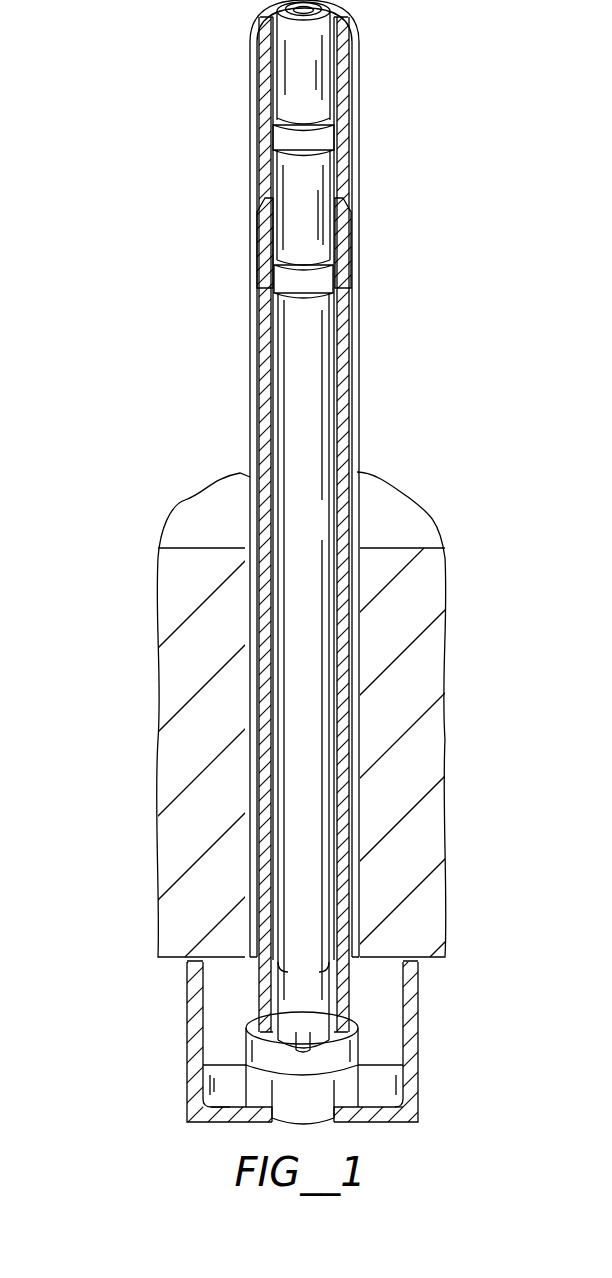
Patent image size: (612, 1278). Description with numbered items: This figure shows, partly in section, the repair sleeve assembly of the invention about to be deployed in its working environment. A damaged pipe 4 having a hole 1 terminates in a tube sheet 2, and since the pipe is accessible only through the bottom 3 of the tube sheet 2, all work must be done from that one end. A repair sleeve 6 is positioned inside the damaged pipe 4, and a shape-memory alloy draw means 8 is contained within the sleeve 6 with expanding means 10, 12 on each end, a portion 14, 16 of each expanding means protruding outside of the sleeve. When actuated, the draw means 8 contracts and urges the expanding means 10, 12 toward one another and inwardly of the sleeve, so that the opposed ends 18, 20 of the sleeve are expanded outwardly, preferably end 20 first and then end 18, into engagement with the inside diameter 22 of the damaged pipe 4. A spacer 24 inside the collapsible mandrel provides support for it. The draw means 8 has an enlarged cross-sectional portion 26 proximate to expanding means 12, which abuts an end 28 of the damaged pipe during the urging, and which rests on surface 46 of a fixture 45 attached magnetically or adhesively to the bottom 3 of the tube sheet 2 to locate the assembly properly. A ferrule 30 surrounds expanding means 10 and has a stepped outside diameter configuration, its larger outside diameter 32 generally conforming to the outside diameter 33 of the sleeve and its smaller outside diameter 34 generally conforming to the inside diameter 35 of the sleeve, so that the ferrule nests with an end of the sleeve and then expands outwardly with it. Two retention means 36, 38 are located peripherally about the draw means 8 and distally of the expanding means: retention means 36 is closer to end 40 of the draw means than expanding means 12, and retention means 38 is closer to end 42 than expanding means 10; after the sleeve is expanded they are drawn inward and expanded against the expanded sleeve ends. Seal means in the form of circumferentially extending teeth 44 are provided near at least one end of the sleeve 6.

The hole 1 is at (250, 713).
The tube sheet 2 is at (410, 607).
The bottom of the tube sheet 3 is at (427, 963).
The damaged pipe 4 is at (253, 592).
The repair sleeve 6 is at (262, 505).
The shape-memory alloy draw means 8 is at (307, 518).
The expanding means 10 is at (315, 178).
The expanding means 12 is at (343, 975).
The protruding portion of expanding means 14 is at (268, 162).
The protruding portion of expanding means 16 is at (238, 1010).
The sleeve end 18 is at (338, 255).
The sleeve end 20 is at (360, 930).
The inside diameter of the damaged pipe 22 is at (362, 860).
The spacer 24 is at (290, 1037).
The enlarged cross-sectional portion 26 is at (262, 1075).
The end of the damaged pipe 28 is at (260, 968).
The ferrule 30 is at (265, 200).
The larger outside diameter of the ferrule 32 is at (343, 217).
The outside diameter of the sleeve 33 is at (257, 289).
The smaller outside diameter of the ferrule 34 is at (270, 251).
The inside diameter of the sleeve 35 is at (335, 300).
The retention means 36 is at (340, 1003).
The retention means 38 is at (335, 72).
The end of the draw means 40 is at (313, 1125).
The end of the draw means 42 is at (300, 15).
The circumferentially extending teeth 44 is at (252, 905).
The fixture 45 is at (420, 1108).
The surface of the fixture 46 is at (235, 1095).